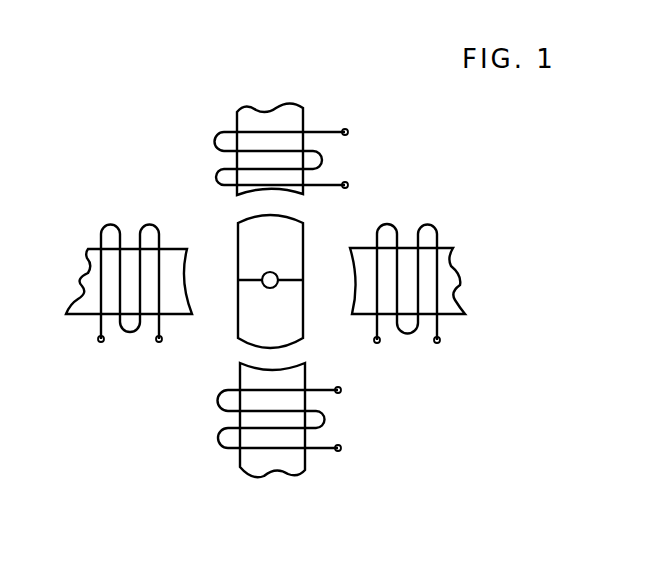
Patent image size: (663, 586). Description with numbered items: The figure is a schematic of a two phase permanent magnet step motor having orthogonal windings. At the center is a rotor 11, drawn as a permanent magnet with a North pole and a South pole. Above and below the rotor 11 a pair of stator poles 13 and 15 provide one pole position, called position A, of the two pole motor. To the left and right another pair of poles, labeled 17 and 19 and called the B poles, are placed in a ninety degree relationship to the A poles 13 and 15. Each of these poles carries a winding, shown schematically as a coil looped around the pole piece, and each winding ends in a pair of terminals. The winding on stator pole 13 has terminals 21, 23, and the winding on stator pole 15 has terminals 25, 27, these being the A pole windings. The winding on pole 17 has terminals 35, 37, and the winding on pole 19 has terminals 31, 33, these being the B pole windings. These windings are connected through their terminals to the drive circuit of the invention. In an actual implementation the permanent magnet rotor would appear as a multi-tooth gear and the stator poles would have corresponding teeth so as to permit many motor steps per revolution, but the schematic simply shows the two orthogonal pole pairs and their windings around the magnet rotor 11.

The rotor 11 is at (242, 232).
The stator pole 13 is at (246, 116).
The stator pole 15 is at (257, 463).
The pole 17 is at (85, 283).
The pole 19 is at (445, 268).
The terminal 21 is at (348, 183).
The terminal 23 is at (348, 130).
The terminal 25 is at (341, 446).
The terminal 27 is at (341, 389).
The terminal 31 is at (374, 343).
The terminal 33 is at (440, 343).
The terminal 35 is at (98, 341).
The terminal 37 is at (161, 342).